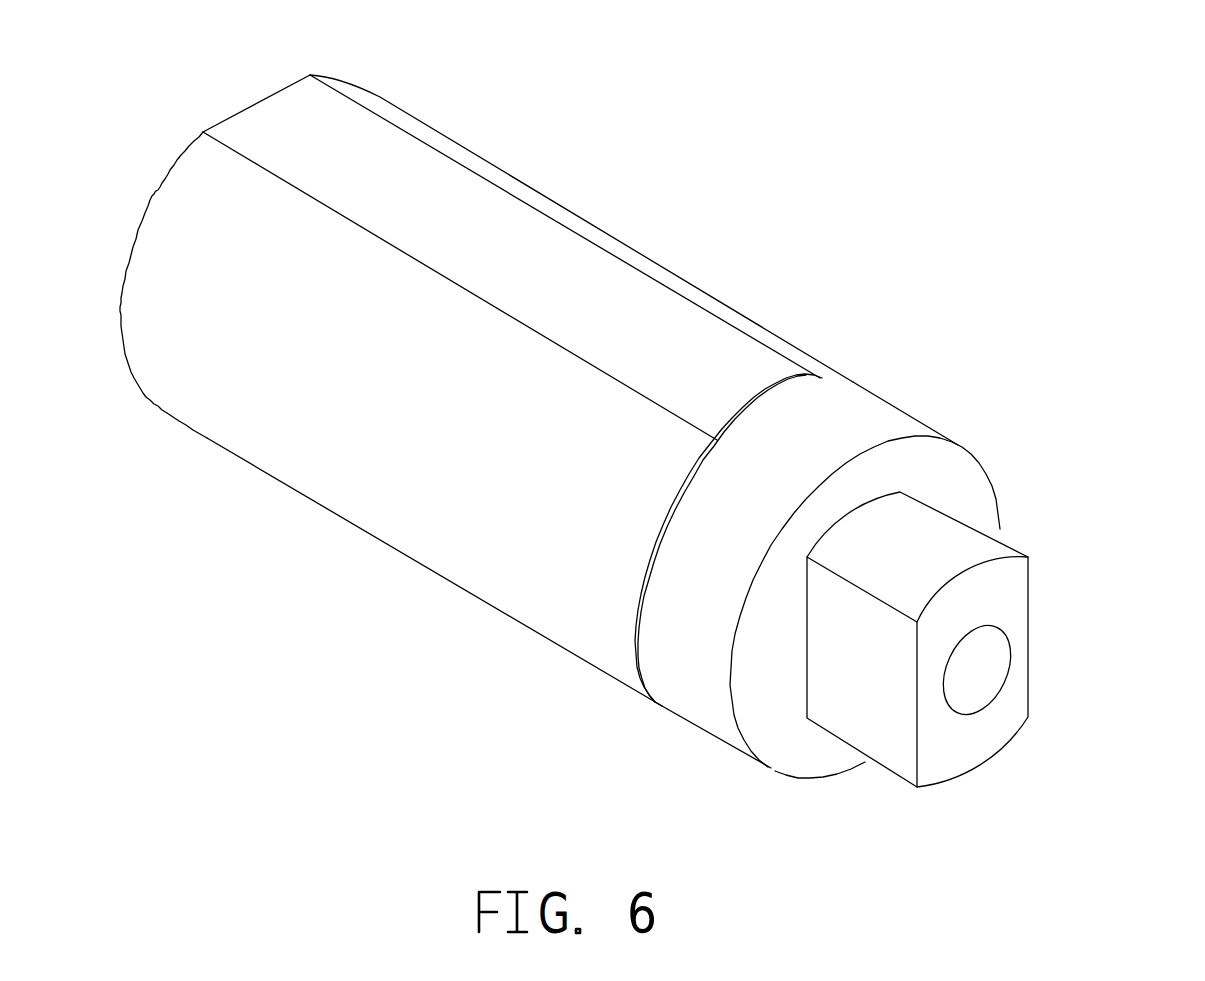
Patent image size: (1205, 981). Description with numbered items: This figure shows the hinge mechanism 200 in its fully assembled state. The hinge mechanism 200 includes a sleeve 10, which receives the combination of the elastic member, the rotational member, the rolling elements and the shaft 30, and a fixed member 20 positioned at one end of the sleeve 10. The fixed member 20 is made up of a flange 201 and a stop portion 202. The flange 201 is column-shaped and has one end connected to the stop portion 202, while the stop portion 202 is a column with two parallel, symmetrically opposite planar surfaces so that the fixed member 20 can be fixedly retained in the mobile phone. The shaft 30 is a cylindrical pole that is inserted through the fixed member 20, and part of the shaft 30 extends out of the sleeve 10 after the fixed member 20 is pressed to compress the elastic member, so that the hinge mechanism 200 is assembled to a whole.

The hinge mechanism 200 is at (646, 51).
The sleeve 10 is at (548, 272).
The fixed member 20 is at (852, 428).
The flange 201 is at (705, 683).
The stop portion 202 is at (888, 717).
The shaft 30 is at (983, 659).